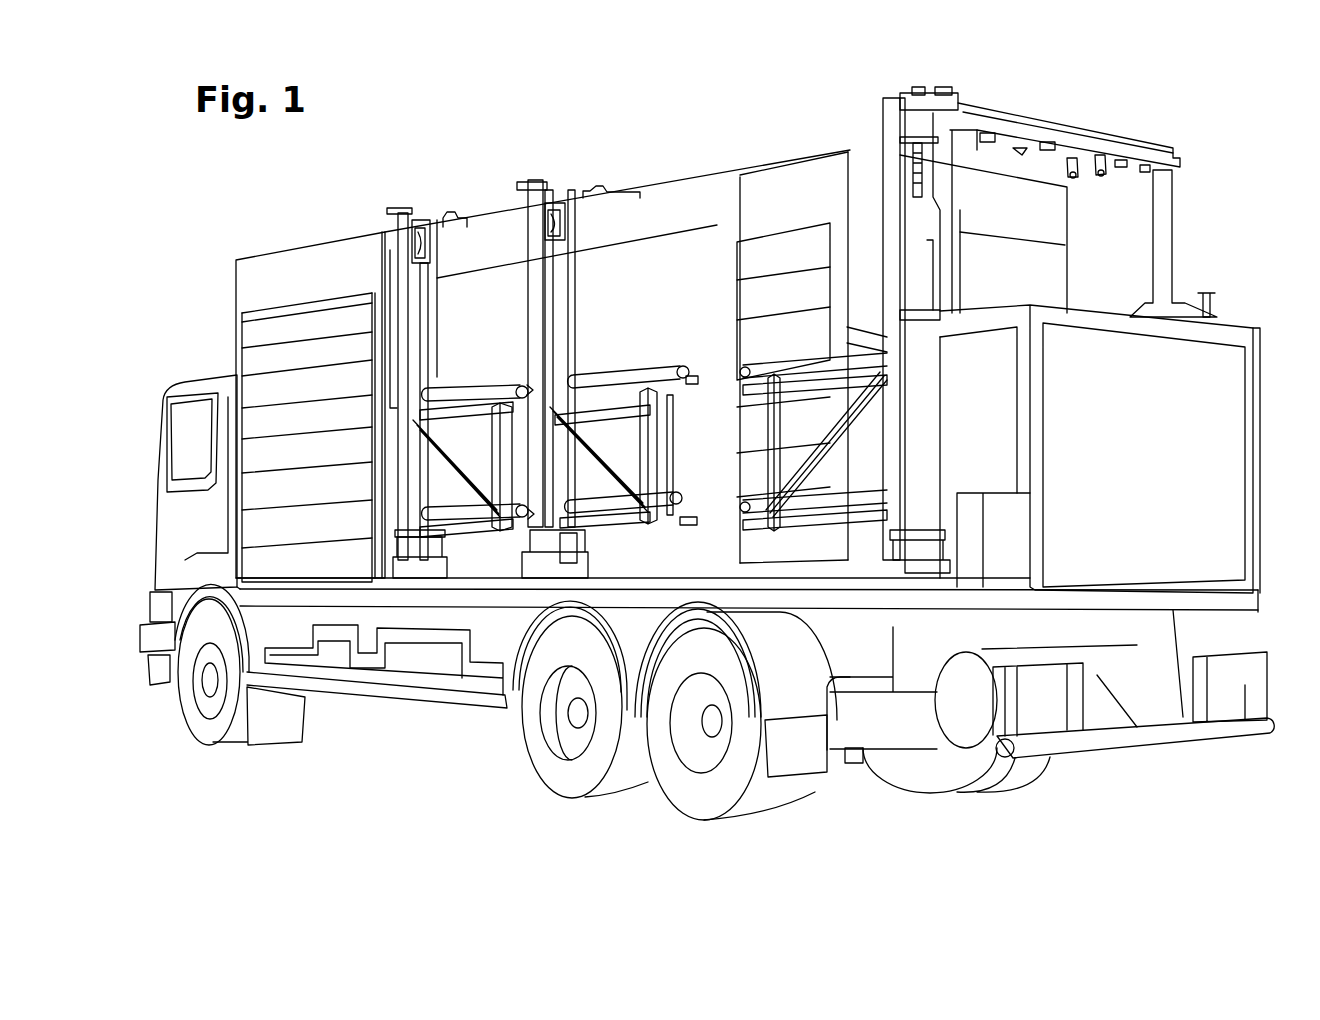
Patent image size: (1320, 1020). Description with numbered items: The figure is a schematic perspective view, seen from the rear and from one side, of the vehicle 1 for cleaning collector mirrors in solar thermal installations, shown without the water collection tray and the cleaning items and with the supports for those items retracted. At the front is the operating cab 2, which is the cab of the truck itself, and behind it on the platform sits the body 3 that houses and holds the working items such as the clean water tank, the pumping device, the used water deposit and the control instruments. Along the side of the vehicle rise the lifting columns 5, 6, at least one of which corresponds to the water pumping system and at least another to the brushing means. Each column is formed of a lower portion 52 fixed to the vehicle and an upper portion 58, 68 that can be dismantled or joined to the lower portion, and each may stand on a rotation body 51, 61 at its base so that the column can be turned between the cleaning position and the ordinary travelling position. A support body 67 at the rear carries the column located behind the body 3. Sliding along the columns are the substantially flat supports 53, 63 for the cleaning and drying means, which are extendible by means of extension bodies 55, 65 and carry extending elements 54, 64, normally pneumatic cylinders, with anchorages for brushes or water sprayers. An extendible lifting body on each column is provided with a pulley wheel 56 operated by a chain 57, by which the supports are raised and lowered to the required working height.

The vehicle 1 is at (693, 147).
The operating cab 2 is at (167, 520).
The body 3 is at (650, 317).
The lifting column 5 is at (407, 300).
The lifting column 6 is at (880, 195).
The rotation body 51 is at (408, 557).
The lower portion 52 is at (420, 217).
The support 53 is at (468, 407).
The extending element 54 is at (437, 277).
The extension body 55 is at (527, 388).
The pulley wheel 56 is at (557, 250).
The chain 57 is at (573, 250).
The upper portion 58 is at (607, 193).
The rotation body 61 is at (902, 550).
The support 63 is at (844, 362).
The extending element 64 is at (804, 382).
The extension body 65 is at (741, 367).
The support body 67 is at (1168, 218).
The upper portion 68 is at (1067, 138).